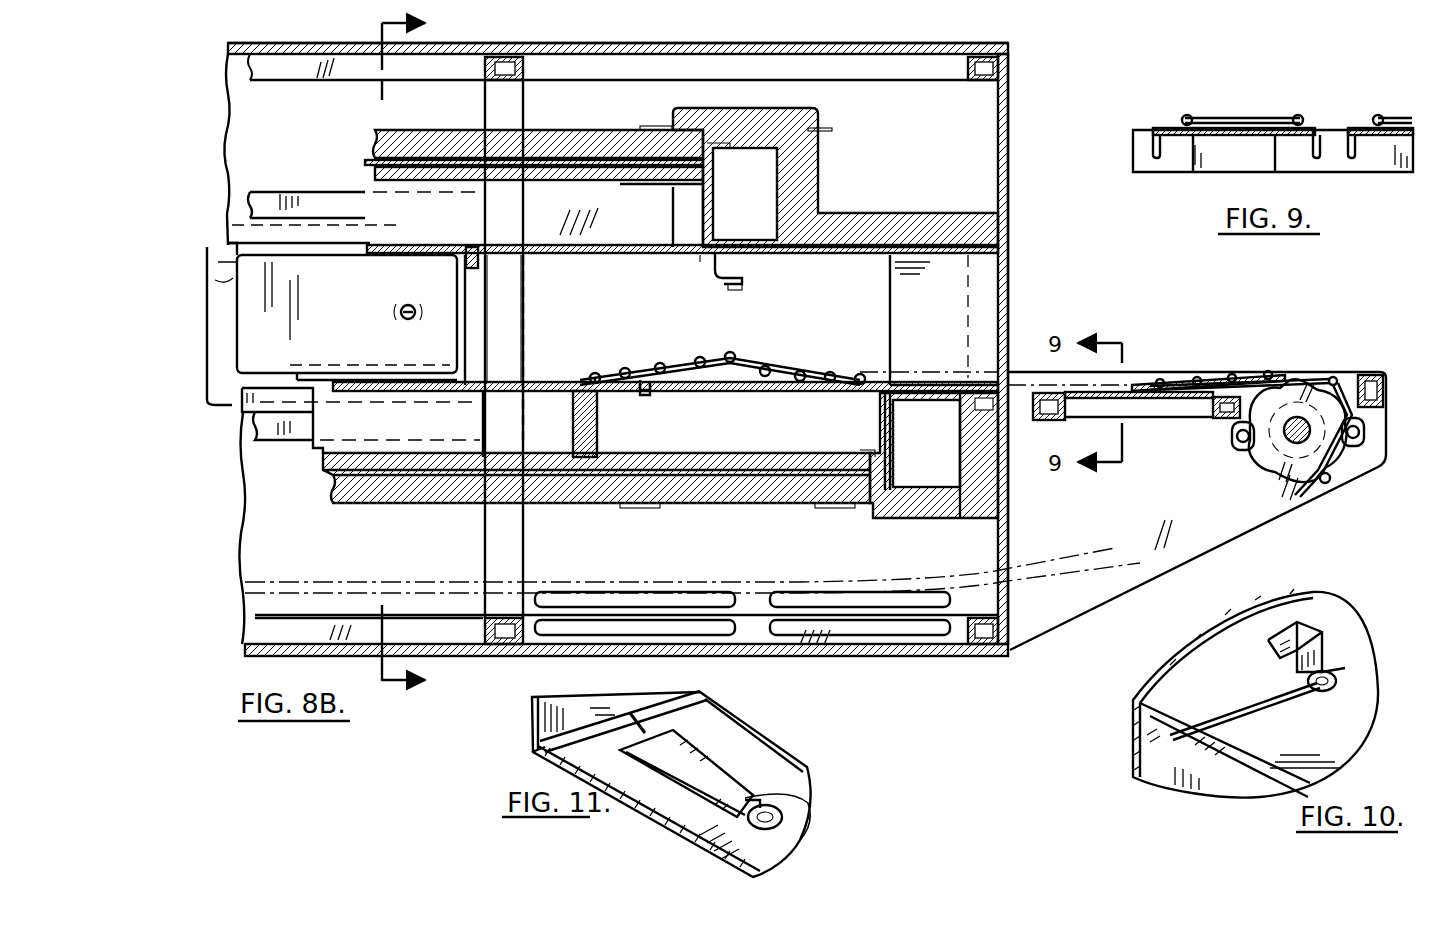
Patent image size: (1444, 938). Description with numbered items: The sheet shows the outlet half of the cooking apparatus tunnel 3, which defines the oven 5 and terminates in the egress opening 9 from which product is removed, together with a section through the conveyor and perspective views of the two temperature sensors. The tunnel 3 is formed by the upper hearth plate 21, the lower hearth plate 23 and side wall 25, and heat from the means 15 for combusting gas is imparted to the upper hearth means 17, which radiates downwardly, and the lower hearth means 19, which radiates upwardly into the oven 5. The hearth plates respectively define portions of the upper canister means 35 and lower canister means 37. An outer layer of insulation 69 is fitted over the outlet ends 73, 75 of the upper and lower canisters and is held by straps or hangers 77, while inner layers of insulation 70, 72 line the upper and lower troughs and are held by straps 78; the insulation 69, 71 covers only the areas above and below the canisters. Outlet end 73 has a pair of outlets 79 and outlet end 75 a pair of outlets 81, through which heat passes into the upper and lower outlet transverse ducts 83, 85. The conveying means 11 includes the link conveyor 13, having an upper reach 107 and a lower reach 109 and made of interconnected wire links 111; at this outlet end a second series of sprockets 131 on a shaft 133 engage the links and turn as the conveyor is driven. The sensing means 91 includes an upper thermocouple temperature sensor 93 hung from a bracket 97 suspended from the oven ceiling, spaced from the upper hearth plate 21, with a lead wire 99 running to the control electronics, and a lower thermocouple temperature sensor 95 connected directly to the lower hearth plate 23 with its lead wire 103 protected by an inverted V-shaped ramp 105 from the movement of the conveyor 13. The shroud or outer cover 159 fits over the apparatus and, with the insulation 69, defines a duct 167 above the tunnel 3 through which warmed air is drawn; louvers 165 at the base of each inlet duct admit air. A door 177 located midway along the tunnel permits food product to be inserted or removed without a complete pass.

In FIG. 8B, the tunnel 3 is at (986, 297).
In FIG. 8B, the oven 5 is at (182, 295).
In FIG. 8B, the egress end opening 9 is at (1006, 327).
In FIG. 8B, the conveying means 11 is at (1315, 370).
In FIG. 8B, the link conveyor 13 is at (1180, 380).
In FIG. 9, the link conveyor 13 is at (1297, 98).
In FIG. 8B, the means for combusting gas 15 is at (425, 353).
In FIG. 8B, the upper hearth means 17 is at (600, 260).
In FIG. 8B, the lower hearth means 19 is at (508, 360).
In FIG. 11, the lower hearth means 19 is at (815, 765).
In FIG. 8B, the upper hearth plate 21 is at (392, 255).
In FIG. 10, the upper hearth plate 21 is at (1183, 677).
In FIG. 8B, the lower hearth plate 23 is at (365, 380).
In FIG. 11, the lower hearth plate 23 is at (660, 818).
In FIG. 8B, the side wall 25 is at (582, 325).
In FIG. 10, the side wall 25 is at (1140, 760).
In FIG. 11, the side wall 25 is at (533, 733).
In FIG. 8B, the upper canister means 35 is at (583, 229).
In FIG. 8B, the lower canister means 37 is at (556, 435).
In FIG. 8B, the outer layer of insulation 69 is at (812, 125).
In FIG. 8B, the inner layer of insulation 70 is at (545, 160).
In FIG. 8B, the insulation 71 is at (702, 512).
In FIG. 8B, the inner layer of insulation 72 is at (695, 468).
In FIG. 8B, the outlet end of upper canister 73 is at (821, 146).
In FIG. 8B, the outlet end of lower canister 75 is at (1008, 460).
In FIG. 8B, the straps or hangers 77 is at (655, 126).
In FIG. 8B, the straps 78 is at (628, 253).
In FIG. 8B, the outlets 79 is at (673, 210).
In FIG. 8B, the outlets 81 is at (883, 430).
In FIG. 8B, the upper outlet transverse duct 83 is at (757, 206).
In FIG. 8B, the lower outlet transverse duct 85 is at (938, 449).
In FIG. 8B, the sensing means 91 is at (710, 328).
In FIG. 8B, the upper thermocouple temperature sensor 93 is at (742, 282).
In FIG. 10, the upper thermocouple temperature sensor 93 is at (1280, 708).
In FIG. 8B, the lower thermocouple temperature sensor 95 is at (735, 390).
In FIG. 11, the lower thermocouple temperature sensor 95 is at (655, 725).
In FIG. 8B, the bracket 97 is at (713, 282).
In FIG. 10, the bracket 97 is at (1340, 648).
In FIG. 10, the lead wire 99 is at (1140, 718).
In FIG. 11, the lead wire 103 is at (580, 696).
In FIG. 8B, the inverted V-shaped ramp 105 is at (745, 365).
In FIG. 11, the inverted V-shaped ramp 105 is at (740, 760).
In FIG. 8B, the upper reach 107 is at (1243, 375).
In FIG. 8B, the lower reach 109 is at (1116, 577).
In FIG. 8B, the wire links 111 is at (1350, 475).
In FIG. 9, the wire links 111 is at (1238, 85).
In FIG. 8B, the second series of sprockets 131 is at (1260, 469).
In FIG. 8B, the shaft 133 is at (1317, 477).
In FIG. 8B, the shroud or outer cover 159 is at (685, 30).
In FIG. 8B, the louvers 165 is at (575, 608).
In FIG. 8B, the duct 167 is at (410, 115).
In FIG. 8B, the door 177 is at (208, 343).